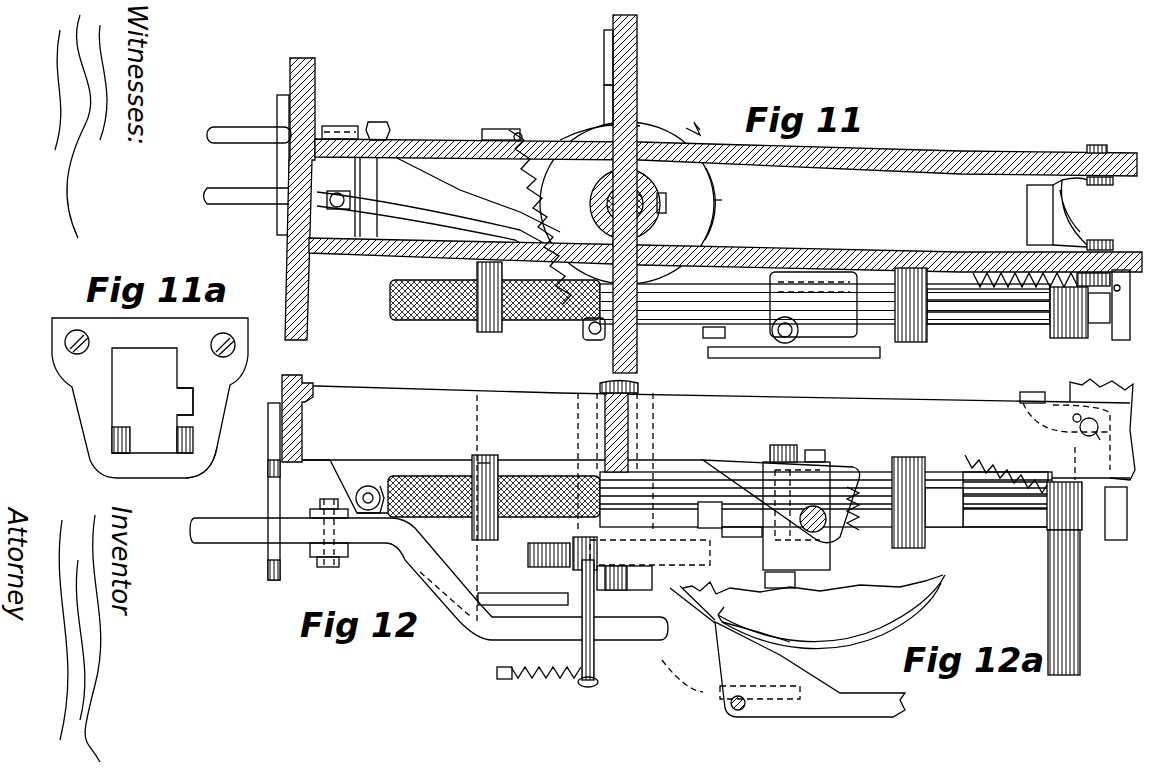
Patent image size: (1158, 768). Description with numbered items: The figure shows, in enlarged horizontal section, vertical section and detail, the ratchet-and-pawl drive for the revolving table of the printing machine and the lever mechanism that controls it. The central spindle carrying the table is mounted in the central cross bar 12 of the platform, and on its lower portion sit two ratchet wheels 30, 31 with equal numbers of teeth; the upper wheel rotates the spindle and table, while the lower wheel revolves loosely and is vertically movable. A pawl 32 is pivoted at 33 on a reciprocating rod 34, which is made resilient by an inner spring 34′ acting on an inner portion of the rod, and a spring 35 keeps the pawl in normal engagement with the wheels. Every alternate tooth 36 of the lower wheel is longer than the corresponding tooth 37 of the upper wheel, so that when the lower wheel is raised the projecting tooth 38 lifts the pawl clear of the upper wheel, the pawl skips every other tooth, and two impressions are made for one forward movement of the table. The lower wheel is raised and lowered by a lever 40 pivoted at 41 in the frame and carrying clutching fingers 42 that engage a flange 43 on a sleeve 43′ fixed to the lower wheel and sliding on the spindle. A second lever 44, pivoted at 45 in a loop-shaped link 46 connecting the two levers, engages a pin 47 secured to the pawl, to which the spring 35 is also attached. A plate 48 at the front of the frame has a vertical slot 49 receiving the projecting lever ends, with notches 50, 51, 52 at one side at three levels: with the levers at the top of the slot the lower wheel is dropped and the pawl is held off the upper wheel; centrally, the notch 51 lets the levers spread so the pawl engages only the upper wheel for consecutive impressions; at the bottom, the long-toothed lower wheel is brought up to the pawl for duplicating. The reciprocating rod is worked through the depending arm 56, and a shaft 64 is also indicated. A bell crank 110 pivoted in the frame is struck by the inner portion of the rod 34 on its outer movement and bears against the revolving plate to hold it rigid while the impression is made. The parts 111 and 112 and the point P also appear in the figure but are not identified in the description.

In FIG. 11, the central cross bar 12 is at (638, 90).
In FIG. 12, the central cross bar 12 is at (630, 418).
In FIG. 11, the ratchet wheel 30 is at (716, 198).
In FIG. 12, the ratchet wheel 30 is at (488, 510).
In FIG. 12A, the ratchet wheel 30 is at (888, 600).
In FIG. 11, the ratchet wheel 31 is at (716, 236).
In FIG. 12, the ratchet wheel 31 is at (488, 519).
In FIG. 12A, the ratchet wheel 31 is at (930, 594).
In FIG. 11, the pawl 32 is at (584, 345).
In FIG. 12, the pawl 32 is at (575, 566).
In FIG. 12A, the pawl 32 is at (682, 676).
In FIG. 11, the pivot 33 is at (783, 343).
In FIG. 12, the pivot 33 is at (795, 572).
In FIG. 11, the reciprocating rod 34 is at (700, 324).
In FIG. 12, the reciprocating rod 34 is at (656, 492).
In FIG. 11, the inner spring 34′ is at (445, 318).
In FIG. 12, the inner spring 34′ is at (423, 483).
In FIG. 11, the spring 35 is at (532, 217).
In FIG. 12, the spring 35 is at (555, 680).
In FIG. 11, the alternate tooth 36 is at (590, 122).
In FIG. 12A, the alternate tooth 36 is at (712, 636).
In FIG. 11, the tooth 37 is at (636, 124).
In FIG. 12A, the tooth 37 is at (730, 614).
In FIG. 11, the projecting tooth 38 is at (756, 196).
In FIG. 12A, the projecting tooth 38 is at (752, 620).
In FIG. 11, the lever 40 is at (466, 190).
In FIG. 11A, the lever 40 is at (128, 455).
In FIG. 12, the lever 40 is at (528, 603).
In FIG. 11, the pivot 41 is at (390, 126).
In FIG. 12, the pivot 41 is at (374, 486).
In FIG. 11, the clutching fingers 42 is at (666, 202).
In FIG. 12, the clutching fingers 42 is at (616, 592).
In FIG. 12, the flange 43 is at (712, 540).
In FIG. 12, the sleeve 43′ is at (660, 566).
In FIG. 11, the second lever 44 is at (437, 215).
In FIG. 11A, the second lever 44 is at (182, 455).
In FIG. 12, the second lever 44 is at (478, 612).
In FIG. 12A, the second lever 44 is at (705, 693).
In FIG. 11, the pivot 45 is at (289, 236).
In FIG. 11, the link 46 is at (342, 127).
In FIG. 12, the link 46 is at (347, 552).
In FIG. 11, the pin 47 is at (585, 328).
In FIG. 12, the pin 47 is at (596, 660).
In FIG. 11, the plate 48 is at (277, 212).
In FIG. 11A, the plate 48 is at (208, 462).
In FIG. 12, the plate 48 is at (192, 470).
In FIG. 11A, the vertical slot 49 is at (118, 398).
In FIG. 11A, the notch 50 is at (170, 364).
In FIG. 11A, the notch 51 is at (178, 398).
In FIG. 11A, the notch 52 is at (177, 439).
In FIG. 12, the depending arm 56 is at (1050, 562).
In FIG. 11, the shaft 64 is at (598, 196).
In FIG. 11, the bell crank 110 is at (1027, 208).
In FIG. 12, the bell crank 110 is at (1040, 382).
In FIG. 11, the clamp 111 is at (1092, 145).
In FIG. 12, the clamp 111 is at (1080, 433).
In FIG. 11, the return spring 112 is at (995, 273).
In FIG. 12, the return spring 112 is at (1012, 460).
In FIG. 12, the pin P is at (640, 390).